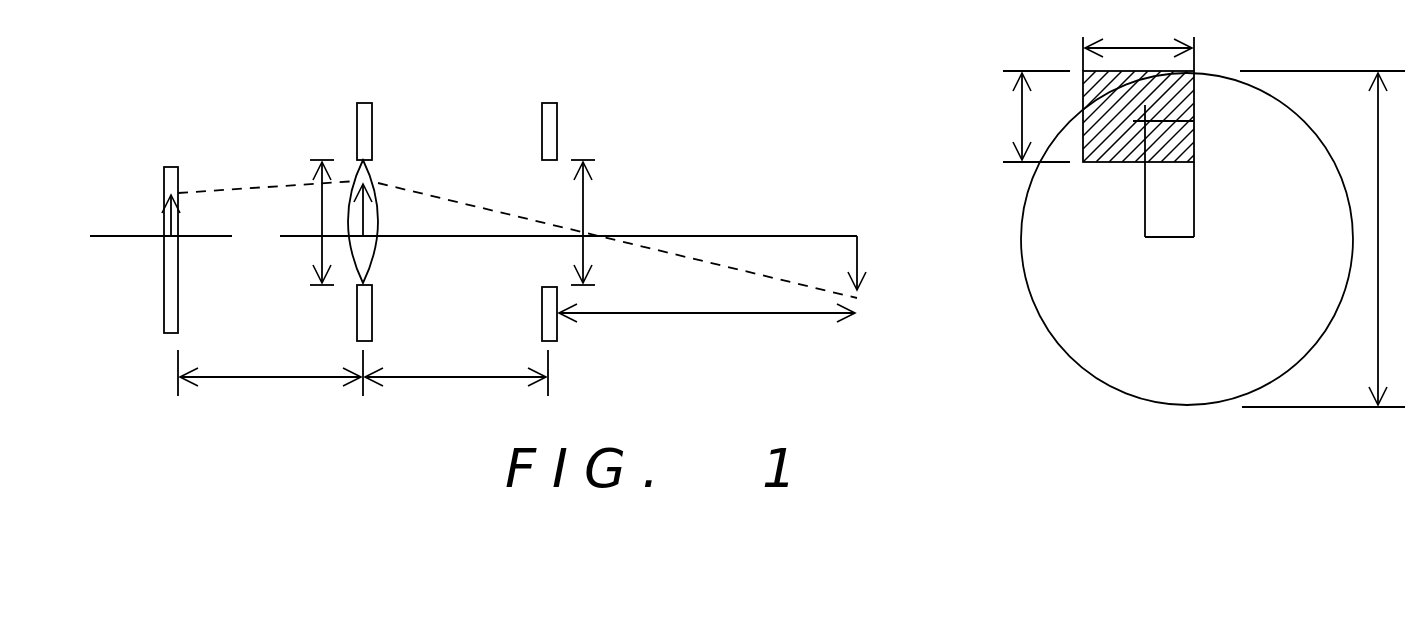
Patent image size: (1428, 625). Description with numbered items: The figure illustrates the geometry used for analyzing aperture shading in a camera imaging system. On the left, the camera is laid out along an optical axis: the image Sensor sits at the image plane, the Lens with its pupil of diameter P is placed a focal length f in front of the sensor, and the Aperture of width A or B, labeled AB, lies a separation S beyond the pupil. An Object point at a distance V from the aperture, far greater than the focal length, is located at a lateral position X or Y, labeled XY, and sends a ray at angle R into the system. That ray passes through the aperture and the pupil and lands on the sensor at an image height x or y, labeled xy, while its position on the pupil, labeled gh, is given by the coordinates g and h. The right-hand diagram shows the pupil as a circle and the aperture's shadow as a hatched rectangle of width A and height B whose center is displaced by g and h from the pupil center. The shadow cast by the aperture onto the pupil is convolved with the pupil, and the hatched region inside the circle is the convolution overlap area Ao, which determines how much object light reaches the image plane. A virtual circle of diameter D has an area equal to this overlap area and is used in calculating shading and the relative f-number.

The image sensor Sensor is at (162, 231).
The lens pupil Lens is at (363, 184).
The aperture Aperture is at (535, 205).
The object Object is at (849, 245).
The image height on sensor xy is at (216, 199).
The central point of aperture's shadow on pupil gh is at (383, 216).
The aperture width AB is at (628, 221).
The object point location XY is at (917, 254).
The pupil diameter P is at (255, 238).
The ray angle R is at (517, 239).
The object distance V is at (707, 333).
The focal length f is at (270, 370).
The aperture-to-pupil separation S is at (456, 370).
The aperture width A is at (1138, 45).
The aperture width B is at (1032, 116).
The virtual circle diameter D is at (1215, 239).
The convolution overlap area Ao is at (1110, 166).
The shadow center coordinate h is at (1197, 124).
The shadow center coordinate g is at (1148, 240).